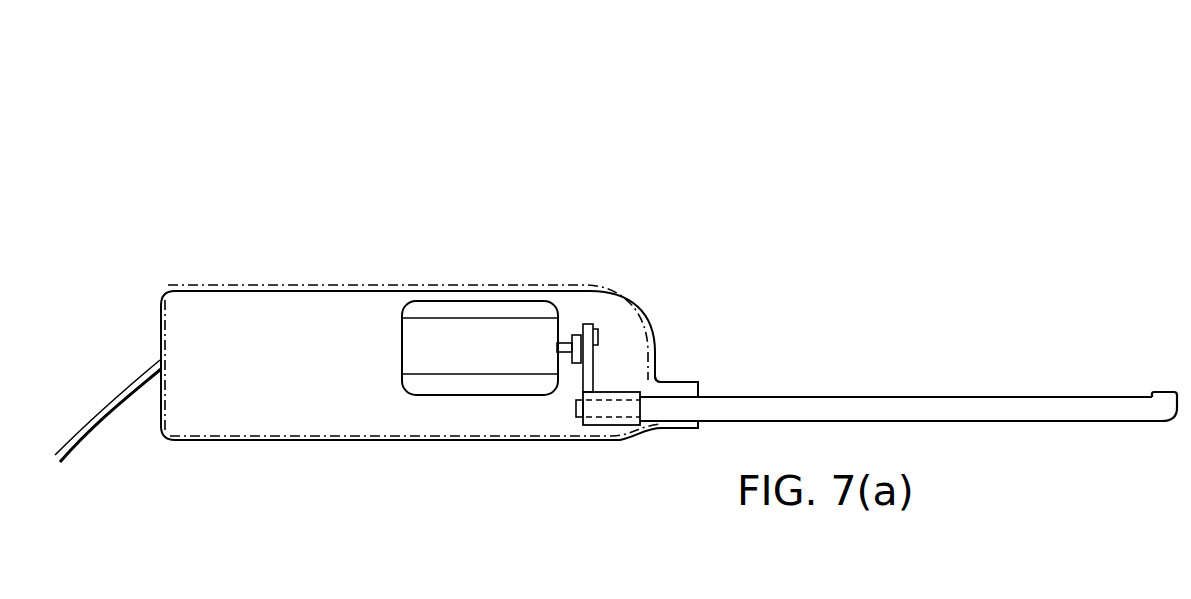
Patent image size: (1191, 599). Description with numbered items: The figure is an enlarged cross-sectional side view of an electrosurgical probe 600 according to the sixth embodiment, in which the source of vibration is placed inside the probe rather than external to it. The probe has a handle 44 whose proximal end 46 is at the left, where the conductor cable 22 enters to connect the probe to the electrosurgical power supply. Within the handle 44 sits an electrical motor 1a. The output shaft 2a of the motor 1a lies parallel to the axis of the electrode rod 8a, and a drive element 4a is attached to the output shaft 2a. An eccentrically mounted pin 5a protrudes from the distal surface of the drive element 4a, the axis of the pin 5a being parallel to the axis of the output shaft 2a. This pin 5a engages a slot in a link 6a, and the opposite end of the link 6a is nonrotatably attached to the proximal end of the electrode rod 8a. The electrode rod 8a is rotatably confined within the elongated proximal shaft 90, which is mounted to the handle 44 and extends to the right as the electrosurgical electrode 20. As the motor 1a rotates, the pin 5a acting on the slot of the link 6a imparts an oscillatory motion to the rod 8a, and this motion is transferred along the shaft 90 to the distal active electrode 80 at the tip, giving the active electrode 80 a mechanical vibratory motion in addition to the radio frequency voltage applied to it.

The electrosurgical probe 600 is at (886, 98).
The proximal end 46 is at (160, 322).
The handle 44 is at (327, 333).
The conductor cable 22 is at (98, 419).
The electrical motor 1a is at (440, 335).
The output shaft 2a is at (572, 362).
The drive element 4a is at (576, 333).
The eccentrically mounted pin 5a is at (596, 340).
The electrode rod 8a is at (582, 420).
The link 6a is at (590, 395).
The elongated proximal shaft 90 is at (722, 397).
The electrosurgical electrode 20 is at (945, 331).
The distal active electrode 80 is at (1158, 393).